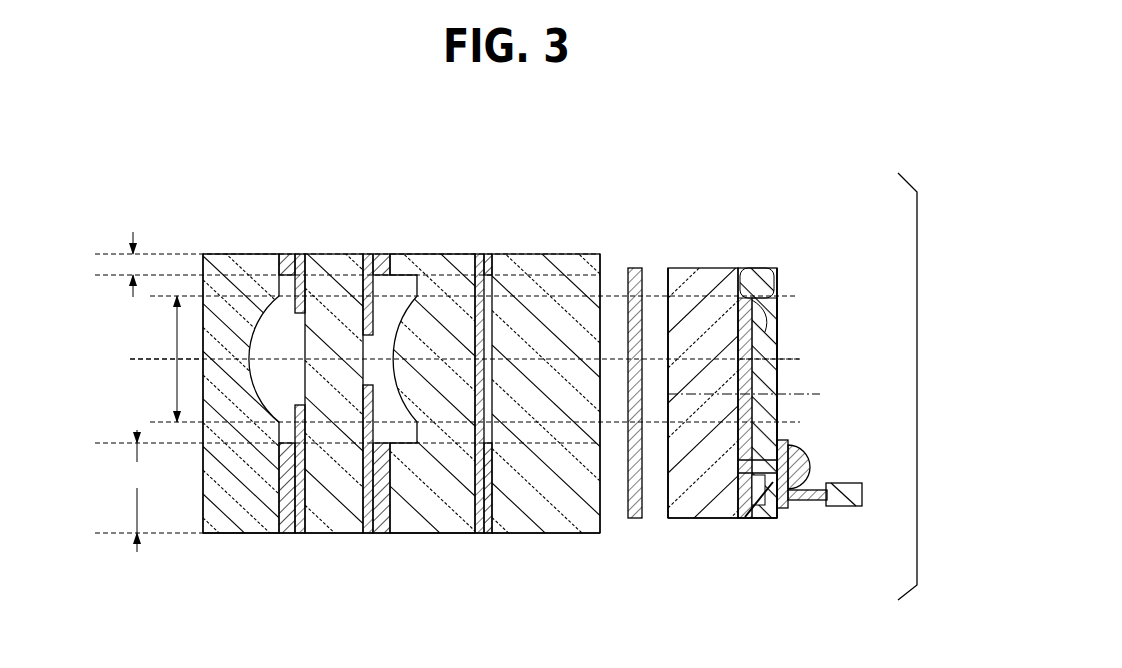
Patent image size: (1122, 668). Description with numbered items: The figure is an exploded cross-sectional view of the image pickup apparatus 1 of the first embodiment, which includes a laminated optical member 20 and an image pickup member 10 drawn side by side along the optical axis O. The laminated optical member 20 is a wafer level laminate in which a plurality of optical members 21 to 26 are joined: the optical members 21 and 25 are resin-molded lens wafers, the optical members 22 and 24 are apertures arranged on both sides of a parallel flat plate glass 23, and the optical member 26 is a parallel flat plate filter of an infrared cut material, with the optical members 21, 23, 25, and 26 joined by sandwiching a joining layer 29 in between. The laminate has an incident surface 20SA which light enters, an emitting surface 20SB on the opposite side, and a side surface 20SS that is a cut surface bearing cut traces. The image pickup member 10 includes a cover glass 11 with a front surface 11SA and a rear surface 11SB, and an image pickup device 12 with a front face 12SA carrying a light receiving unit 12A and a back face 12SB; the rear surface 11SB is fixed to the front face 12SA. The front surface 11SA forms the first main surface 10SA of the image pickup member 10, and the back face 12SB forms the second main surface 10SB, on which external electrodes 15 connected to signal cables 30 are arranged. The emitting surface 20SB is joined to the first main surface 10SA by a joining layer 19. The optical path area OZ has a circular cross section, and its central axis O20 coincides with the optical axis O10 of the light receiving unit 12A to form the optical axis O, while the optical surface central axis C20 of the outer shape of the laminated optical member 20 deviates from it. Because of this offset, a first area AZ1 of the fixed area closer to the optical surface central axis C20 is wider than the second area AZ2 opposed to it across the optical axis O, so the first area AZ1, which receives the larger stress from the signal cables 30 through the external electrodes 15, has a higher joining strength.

The image pickup apparatus 1 is at (824, 231).
The image pickup member 10 is at (777, 208).
The cover glass 11 is at (703, 267).
The image pickup device 12 is at (757, 267).
The light receiving unit 12A is at (777, 315).
The external electrodes 15 is at (783, 438).
The joining layer 19 is at (632, 268).
The laminated optical member 20 is at (548, 171).
The optical member 21 is at (240, 252).
The optical member 22 is at (300, 252).
The parallel flat plate glass 23 is at (335, 252).
The optical member 24 is at (370, 252).
The optical member 25 is at (432, 252).
The optical member 26 is at (538, 252).
The joining layer 29 is at (287, 256).
The signal cables 30 is at (845, 482).
The incident surface 20SA is at (201, 497).
The side surface 20SS is at (407, 535).
The emitting surface 20SB is at (604, 498).
The first main surface 10SA is at (665, 506).
The front surface 11SA is at (674, 432).
The front face 12SA is at (736, 518).
The rear surface 11SB is at (760, 503).
The second main surface 10SB is at (781, 517).
The back face 12SB is at (834, 420).
The optical axis O is at (476, 348).
The optical axis O20 is at (142, 379).
The optical axis O10 is at (798, 363).
The optical surface central axis C20 is at (766, 395).
The optical path area OZ is at (157, 359).
The first area AZ1 is at (141, 491).
The second area AZ2 is at (141, 250).